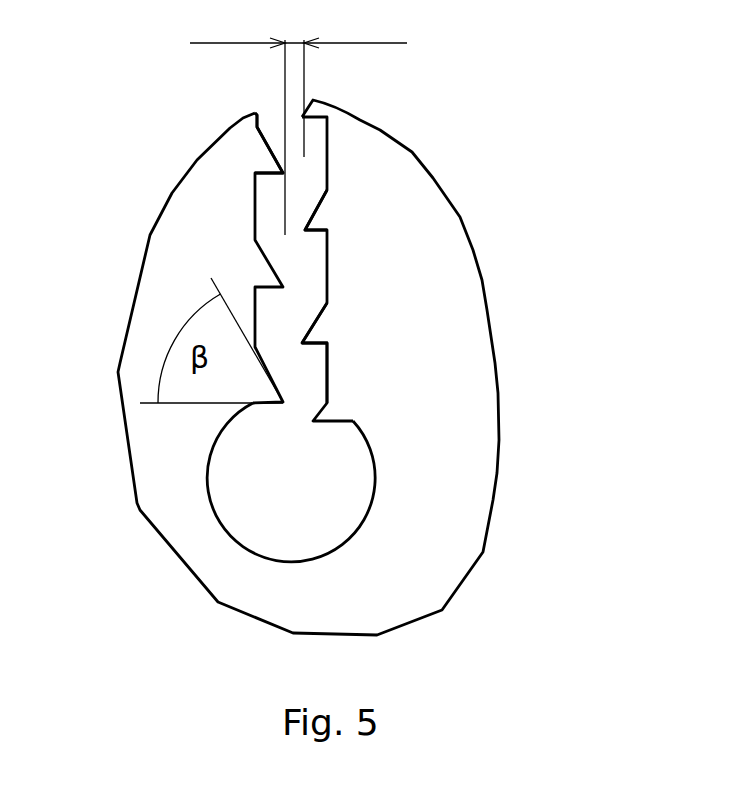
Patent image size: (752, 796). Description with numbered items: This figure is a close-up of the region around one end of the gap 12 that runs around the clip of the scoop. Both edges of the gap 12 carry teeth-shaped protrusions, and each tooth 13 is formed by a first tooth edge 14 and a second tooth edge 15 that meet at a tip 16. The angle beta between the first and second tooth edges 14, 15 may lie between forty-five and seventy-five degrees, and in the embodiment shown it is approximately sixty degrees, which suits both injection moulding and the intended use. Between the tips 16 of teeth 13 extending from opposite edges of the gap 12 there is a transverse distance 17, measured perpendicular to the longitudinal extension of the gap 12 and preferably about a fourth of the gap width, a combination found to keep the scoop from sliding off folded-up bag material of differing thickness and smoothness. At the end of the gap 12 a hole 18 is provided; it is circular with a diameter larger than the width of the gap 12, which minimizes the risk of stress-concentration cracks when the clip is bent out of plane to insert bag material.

The gap 12 is at (294, 370).
The tooth 13 is at (267, 162).
The first tooth edge 14 is at (305, 345).
The second tooth edge 15 is at (318, 316).
The tip 16 is at (306, 231).
The transverse distance 17 is at (298, 121).
The hole 18 is at (285, 487).